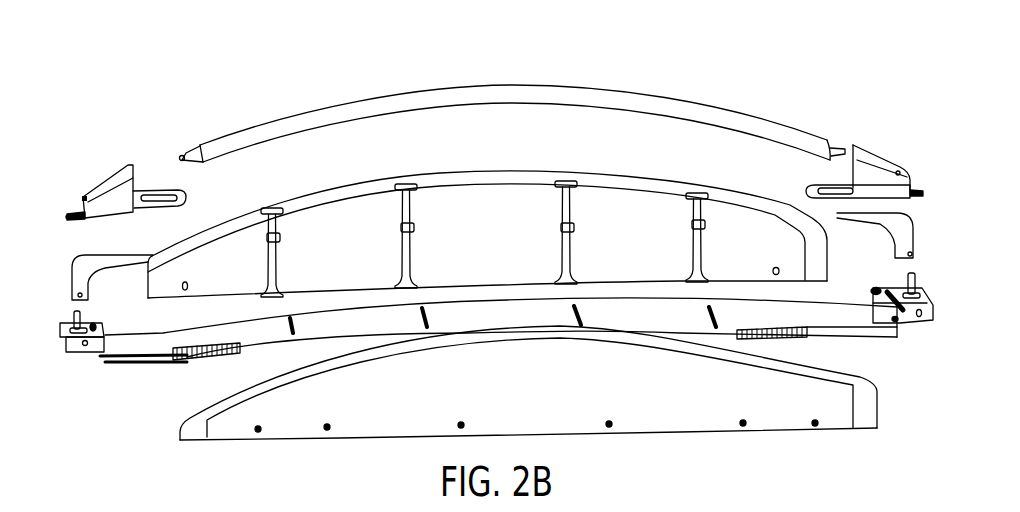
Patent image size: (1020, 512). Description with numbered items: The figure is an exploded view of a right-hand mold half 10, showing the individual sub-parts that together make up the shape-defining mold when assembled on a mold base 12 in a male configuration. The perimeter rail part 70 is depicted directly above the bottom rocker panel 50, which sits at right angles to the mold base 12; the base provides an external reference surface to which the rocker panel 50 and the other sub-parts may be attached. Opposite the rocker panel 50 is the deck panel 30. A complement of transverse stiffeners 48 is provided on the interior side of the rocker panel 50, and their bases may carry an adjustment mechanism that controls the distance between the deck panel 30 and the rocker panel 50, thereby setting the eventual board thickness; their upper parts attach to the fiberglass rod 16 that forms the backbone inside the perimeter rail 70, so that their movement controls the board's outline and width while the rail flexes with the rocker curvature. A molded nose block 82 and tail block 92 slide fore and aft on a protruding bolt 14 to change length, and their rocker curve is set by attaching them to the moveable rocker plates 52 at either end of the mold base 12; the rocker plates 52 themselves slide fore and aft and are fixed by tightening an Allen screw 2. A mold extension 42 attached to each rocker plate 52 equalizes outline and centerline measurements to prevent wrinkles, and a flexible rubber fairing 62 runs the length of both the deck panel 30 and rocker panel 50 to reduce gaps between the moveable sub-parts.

The right-hand mold half 10 is at (818, 106).
The perimeter rail part 70 is at (240, 128).
The fiberglass rod 16 is at (186, 150).
The molded nose block 82 is at (112, 173).
The tail block 92 is at (886, 160).
The flexible rubber fairing 62 is at (276, 201).
The bottom rocker panel 50 is at (450, 210).
The transverse stiffeners 48 is at (264, 232).
The mold extension 42 is at (104, 255).
The protruding bolt 14 is at (186, 291).
The mold base 12 is at (184, 361).
The Allen screw 2 is at (85, 347).
The moveable rocker plates 52 is at (97, 328).
The deck panel 30 is at (307, 440).